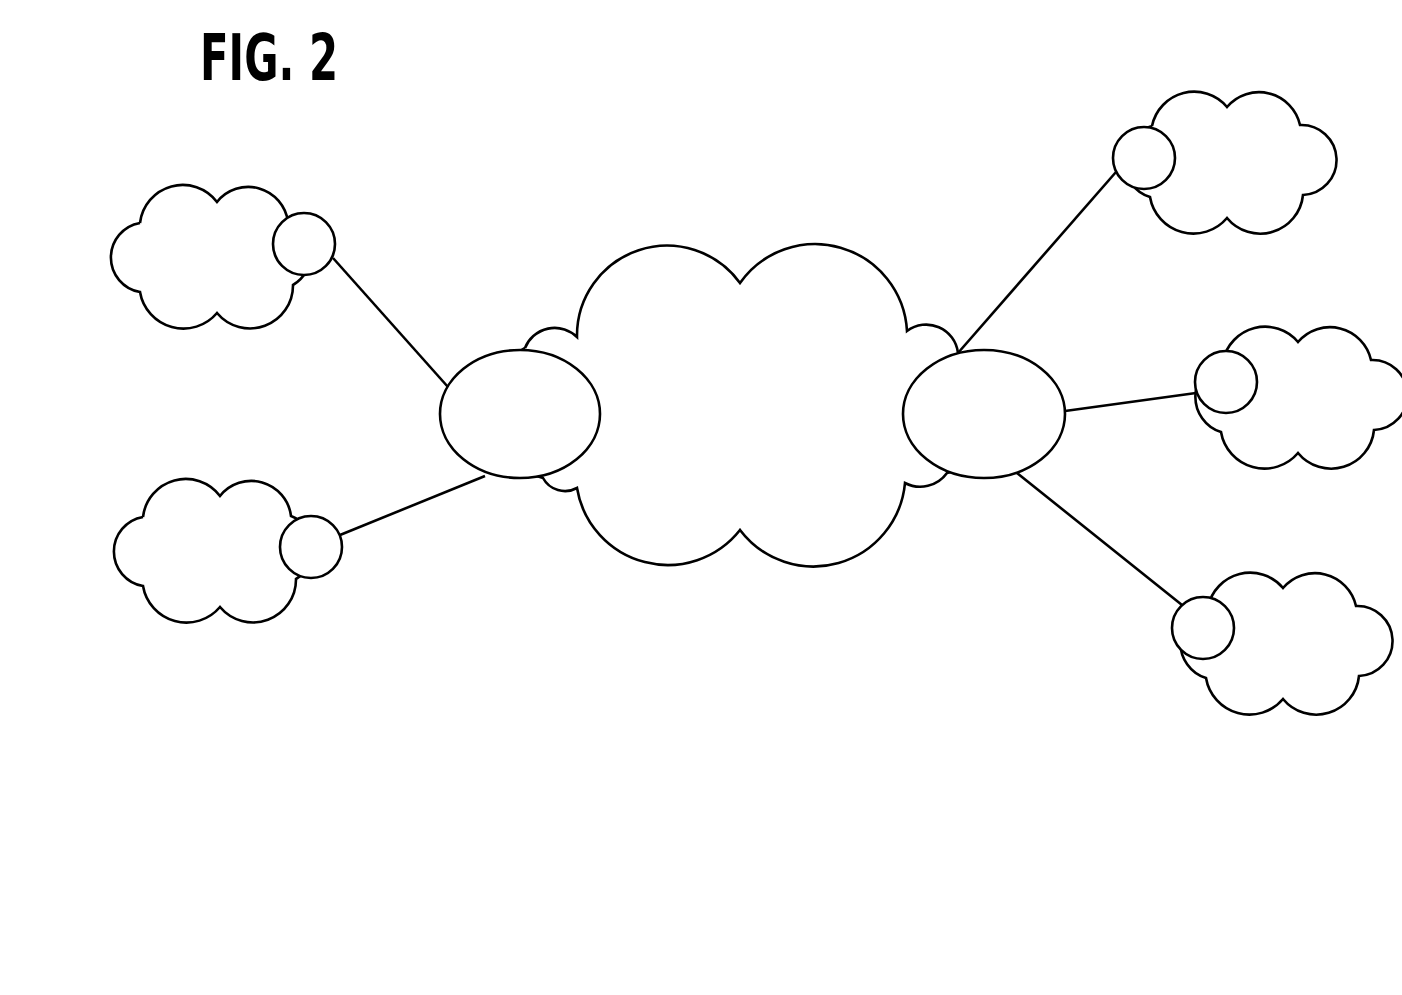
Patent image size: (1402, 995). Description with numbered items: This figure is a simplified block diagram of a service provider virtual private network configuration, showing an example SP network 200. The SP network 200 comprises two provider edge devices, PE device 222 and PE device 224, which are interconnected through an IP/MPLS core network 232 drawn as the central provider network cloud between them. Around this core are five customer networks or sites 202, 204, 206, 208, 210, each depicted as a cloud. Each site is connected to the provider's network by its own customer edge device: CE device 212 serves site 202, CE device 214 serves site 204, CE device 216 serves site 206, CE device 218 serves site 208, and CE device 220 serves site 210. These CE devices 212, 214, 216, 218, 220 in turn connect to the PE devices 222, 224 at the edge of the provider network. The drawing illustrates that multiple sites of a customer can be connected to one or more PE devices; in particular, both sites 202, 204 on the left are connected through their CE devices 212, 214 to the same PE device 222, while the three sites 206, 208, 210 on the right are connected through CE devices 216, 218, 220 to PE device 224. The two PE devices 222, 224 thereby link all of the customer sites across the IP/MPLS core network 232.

The SP network 200 is at (742, 399).
The customer site 202 is at (275, 256).
The customer site 204 is at (214, 551).
The customer site 206 is at (1290, 161).
The customer site 208 is at (1298, 398).
The customer site 210 is at (1286, 644).
The CE device 212 is at (360, 293).
The CE device 214 is at (382, 527).
The CE device 216 is at (1066, 233).
The CE device 218 is at (1161, 365).
The CE device 220 is at (1125, 579).
The PE device 222 is at (572, 414).
The PE device 224 is at (1033, 416).
The IP/MPLS core network 232 is at (850, 265).